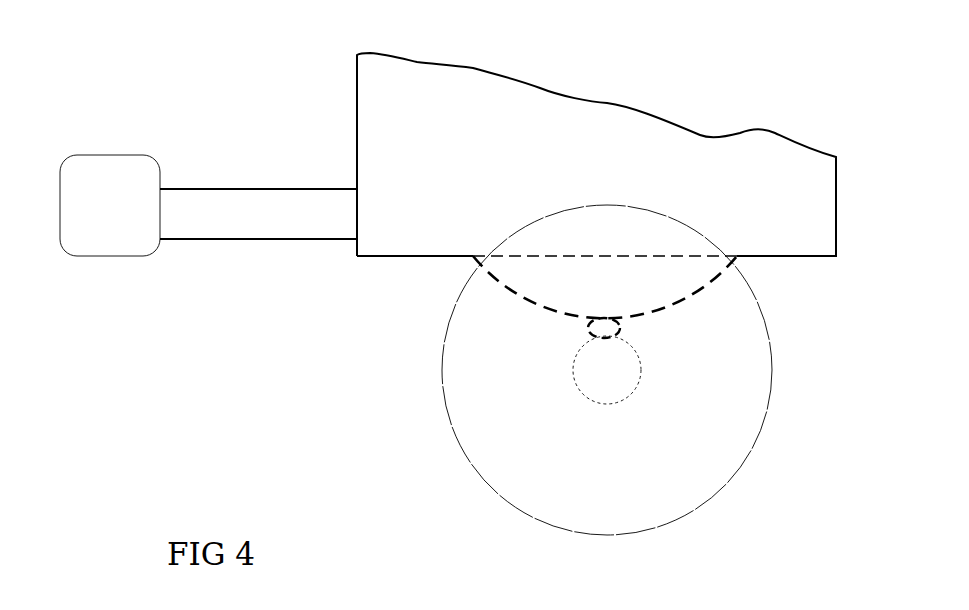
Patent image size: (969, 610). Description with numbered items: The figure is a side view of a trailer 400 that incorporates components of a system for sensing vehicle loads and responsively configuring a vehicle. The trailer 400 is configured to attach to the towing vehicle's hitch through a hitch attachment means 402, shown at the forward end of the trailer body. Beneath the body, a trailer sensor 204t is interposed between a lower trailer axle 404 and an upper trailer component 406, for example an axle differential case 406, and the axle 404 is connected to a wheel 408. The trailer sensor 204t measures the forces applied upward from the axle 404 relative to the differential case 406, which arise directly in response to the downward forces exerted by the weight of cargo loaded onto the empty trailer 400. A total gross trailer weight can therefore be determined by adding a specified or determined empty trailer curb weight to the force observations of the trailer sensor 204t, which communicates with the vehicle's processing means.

The trailer 400 is at (622, 106).
The hitch attachment means 402 is at (110, 256).
The lower trailer axle 404 is at (608, 403).
The upper trailer component 406 is at (642, 318).
The wheel 408 is at (465, 455).
The trailer sensor 204t is at (592, 323).